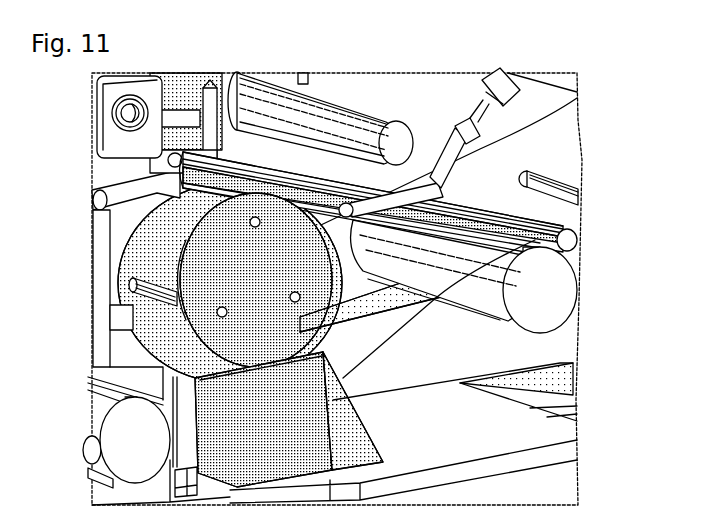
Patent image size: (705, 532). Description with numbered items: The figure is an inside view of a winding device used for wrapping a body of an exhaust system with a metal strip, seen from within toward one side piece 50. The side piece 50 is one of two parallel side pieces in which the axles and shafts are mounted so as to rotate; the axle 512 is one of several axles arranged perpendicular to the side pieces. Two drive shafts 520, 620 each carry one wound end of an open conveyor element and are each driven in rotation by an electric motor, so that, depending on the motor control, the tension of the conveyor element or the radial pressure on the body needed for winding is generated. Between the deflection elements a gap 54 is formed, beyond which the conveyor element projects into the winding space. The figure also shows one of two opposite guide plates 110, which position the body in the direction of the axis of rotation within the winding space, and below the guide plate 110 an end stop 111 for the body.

The gap 54 is at (187, 95).
The side piece 50 is at (347, 91).
The axle 512 is at (348, 106).
The guide plate 110 is at (365, 289).
The end stop 111 is at (300, 337).
The drive shaft 520 is at (540, 290).
The drive shaft 620 is at (125, 440).